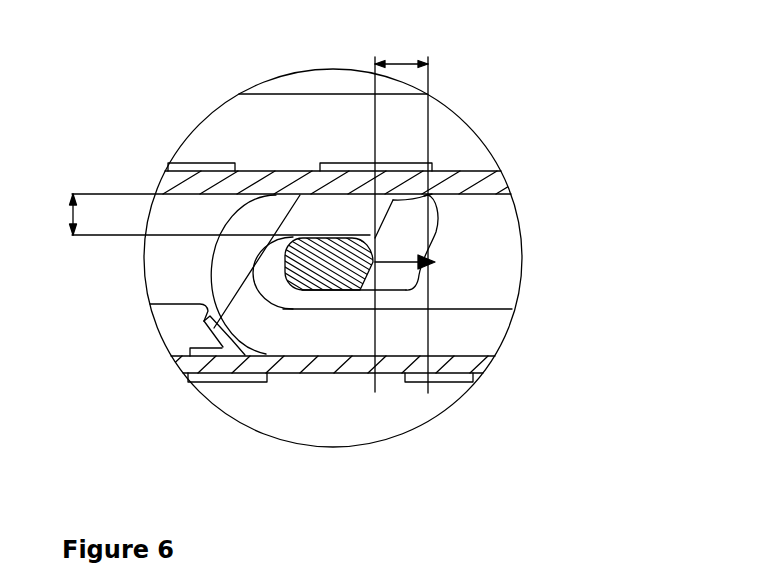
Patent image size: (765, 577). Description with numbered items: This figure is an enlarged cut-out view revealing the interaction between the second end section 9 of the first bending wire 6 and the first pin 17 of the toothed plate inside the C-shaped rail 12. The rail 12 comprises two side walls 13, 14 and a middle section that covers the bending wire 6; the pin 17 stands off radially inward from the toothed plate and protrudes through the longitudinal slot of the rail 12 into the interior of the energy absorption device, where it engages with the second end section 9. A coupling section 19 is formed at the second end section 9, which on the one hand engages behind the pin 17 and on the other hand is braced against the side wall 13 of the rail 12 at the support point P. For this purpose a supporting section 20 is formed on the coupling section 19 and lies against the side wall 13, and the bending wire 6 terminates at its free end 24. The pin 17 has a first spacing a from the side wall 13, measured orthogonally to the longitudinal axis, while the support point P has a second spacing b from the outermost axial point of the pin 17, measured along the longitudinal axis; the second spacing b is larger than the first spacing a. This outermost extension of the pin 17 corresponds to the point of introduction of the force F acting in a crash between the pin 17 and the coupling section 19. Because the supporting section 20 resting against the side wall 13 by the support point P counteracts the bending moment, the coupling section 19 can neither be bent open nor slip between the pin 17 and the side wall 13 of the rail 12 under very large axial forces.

The first bending wire 6 is at (482, 335).
The second end section 9 is at (340, 222).
The rail 12 is at (468, 170).
The side wall 13 is at (478, 185).
The side wall 14 is at (458, 368).
The first pin 17 is at (337, 270).
The coupling section 19 is at (405, 232).
The supporting section 20 is at (430, 195).
The free end 24 is at (433, 197).
The support point P is at (433, 192).
The force F is at (399, 264).
The first spacing a is at (70, 213).
The second spacing b is at (398, 60).